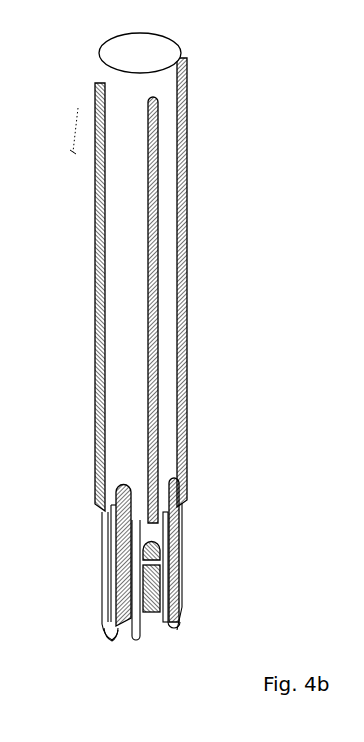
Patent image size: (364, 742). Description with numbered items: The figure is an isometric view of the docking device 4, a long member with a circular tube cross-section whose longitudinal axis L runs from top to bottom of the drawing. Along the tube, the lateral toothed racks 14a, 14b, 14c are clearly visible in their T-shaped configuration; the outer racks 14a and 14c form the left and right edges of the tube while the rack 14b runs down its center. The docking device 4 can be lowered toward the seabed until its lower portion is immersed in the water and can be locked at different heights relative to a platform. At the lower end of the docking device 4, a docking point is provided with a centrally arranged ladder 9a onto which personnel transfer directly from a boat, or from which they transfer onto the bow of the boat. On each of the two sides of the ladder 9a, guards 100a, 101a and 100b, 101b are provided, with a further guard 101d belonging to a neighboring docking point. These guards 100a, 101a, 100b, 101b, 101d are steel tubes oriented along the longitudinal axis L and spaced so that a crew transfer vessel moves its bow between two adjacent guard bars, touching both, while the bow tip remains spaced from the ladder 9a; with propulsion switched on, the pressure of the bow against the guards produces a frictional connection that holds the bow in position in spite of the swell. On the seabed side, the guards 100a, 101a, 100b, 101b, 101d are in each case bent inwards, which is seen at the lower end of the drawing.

The docking device 4 is at (160, 368).
The lateral toothed rack 14a is at (95, 322).
The lateral toothed rack 14b is at (158, 277).
The lateral toothed rack 14c is at (188, 148).
The longitudinal axis L is at (76, 121).
The ladder 9a is at (130, 628).
The guard 100a is at (106, 636).
The guard 100b is at (177, 636).
The guard 101a is at (141, 630).
The guard 101b is at (183, 606).
The guard 101d is at (102, 580).